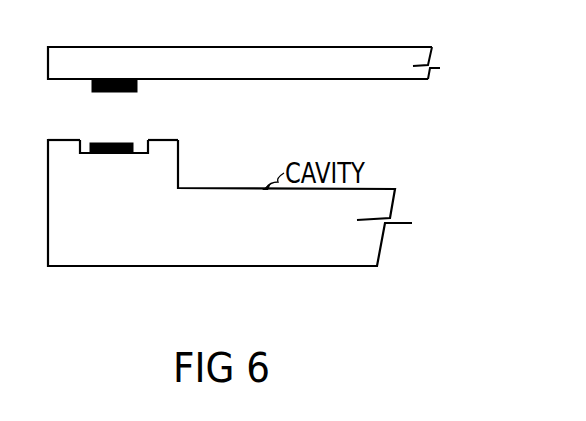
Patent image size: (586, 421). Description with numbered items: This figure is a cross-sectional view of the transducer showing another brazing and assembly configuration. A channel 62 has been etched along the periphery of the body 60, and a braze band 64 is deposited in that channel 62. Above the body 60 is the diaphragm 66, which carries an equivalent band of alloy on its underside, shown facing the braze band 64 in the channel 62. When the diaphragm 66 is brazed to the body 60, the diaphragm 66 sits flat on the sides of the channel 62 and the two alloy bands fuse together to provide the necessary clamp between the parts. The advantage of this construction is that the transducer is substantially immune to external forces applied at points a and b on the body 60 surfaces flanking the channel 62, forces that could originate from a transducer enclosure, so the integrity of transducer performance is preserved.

The body 60 is at (283, 238).
The channel 62 is at (86, 150).
The braze band 64 is at (124, 138).
The diaphragm 66 is at (364, 62).
The point a is at (63, 141).
The point b is at (164, 140).